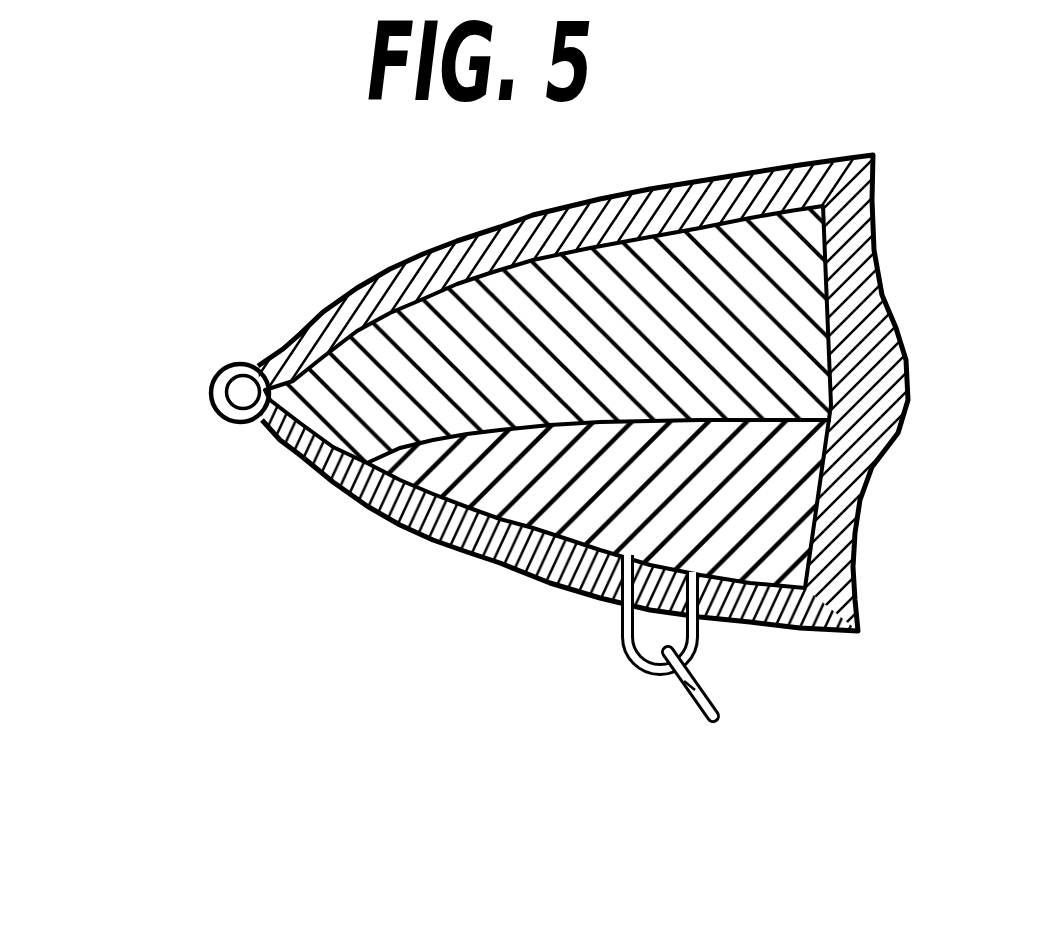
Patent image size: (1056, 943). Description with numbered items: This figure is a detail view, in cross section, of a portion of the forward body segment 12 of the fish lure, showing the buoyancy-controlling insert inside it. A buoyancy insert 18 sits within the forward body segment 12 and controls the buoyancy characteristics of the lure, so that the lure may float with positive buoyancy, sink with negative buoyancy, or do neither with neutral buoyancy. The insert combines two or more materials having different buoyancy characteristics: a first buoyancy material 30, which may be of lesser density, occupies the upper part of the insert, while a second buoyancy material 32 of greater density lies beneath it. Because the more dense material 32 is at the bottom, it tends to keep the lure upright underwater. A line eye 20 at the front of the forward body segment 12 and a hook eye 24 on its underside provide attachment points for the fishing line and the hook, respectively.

The forward body segment 12 is at (830, 152).
The buoyancy insert 18 is at (753, 354).
The line eye 20 is at (235, 424).
The hook eye 24 is at (624, 655).
The first buoyancy material 30 is at (803, 263).
The second buoyancy material 32 is at (776, 554).